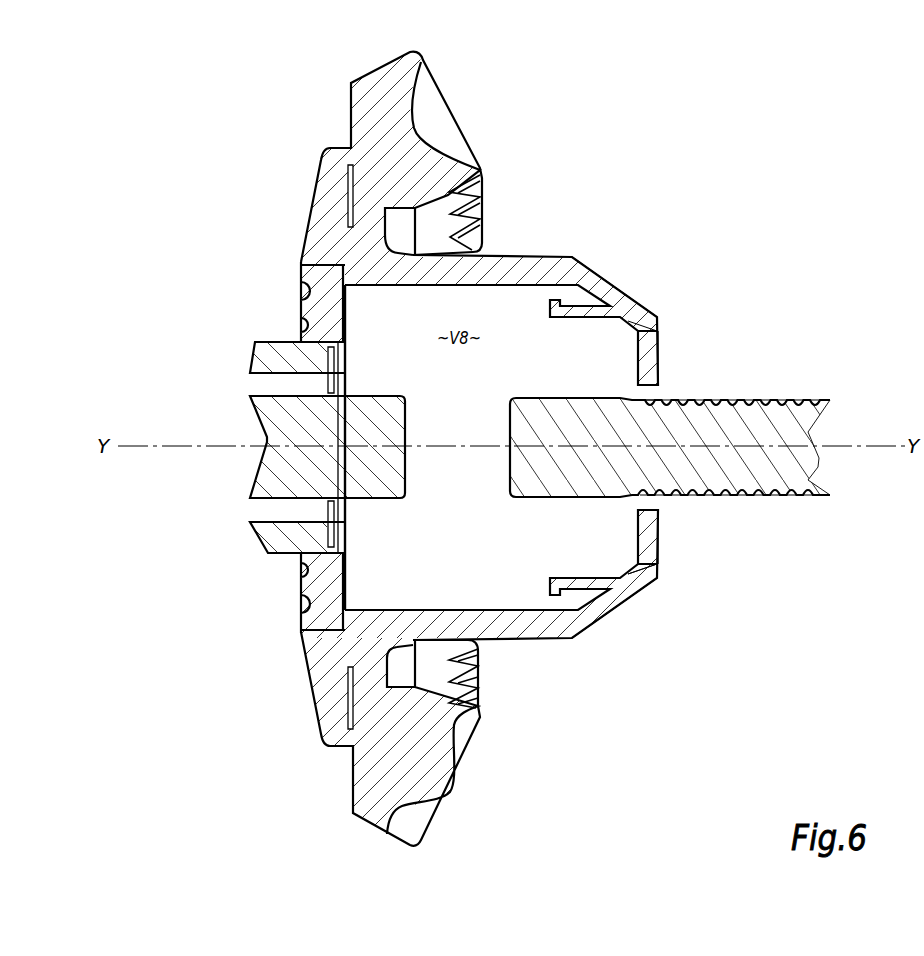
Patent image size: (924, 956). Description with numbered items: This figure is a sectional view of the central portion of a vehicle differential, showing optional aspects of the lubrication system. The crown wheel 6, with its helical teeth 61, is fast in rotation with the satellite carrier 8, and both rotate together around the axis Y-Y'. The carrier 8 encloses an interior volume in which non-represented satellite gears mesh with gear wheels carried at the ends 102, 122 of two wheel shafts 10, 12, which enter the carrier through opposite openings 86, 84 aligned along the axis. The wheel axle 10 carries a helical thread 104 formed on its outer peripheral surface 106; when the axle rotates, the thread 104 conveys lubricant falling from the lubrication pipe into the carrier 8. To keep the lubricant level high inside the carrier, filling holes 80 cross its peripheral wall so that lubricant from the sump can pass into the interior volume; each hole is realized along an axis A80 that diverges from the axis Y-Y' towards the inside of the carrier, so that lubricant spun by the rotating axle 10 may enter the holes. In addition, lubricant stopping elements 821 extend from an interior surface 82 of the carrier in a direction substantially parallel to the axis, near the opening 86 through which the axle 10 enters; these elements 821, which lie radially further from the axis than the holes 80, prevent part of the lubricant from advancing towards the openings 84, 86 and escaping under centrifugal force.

The crown wheel 6 is at (375, 93).
The helical teeth 61 is at (477, 241).
The lubricant stopping elements 821 is at (574, 308).
The satellite carrier 8 is at (618, 273).
The filling holes 80 is at (666, 331).
The axis of filling hole A80 is at (663, 566).
The opening 86 is at (667, 382).
The interior surface 82 is at (613, 580).
The wheel shaft 12 is at (283, 477).
The end of wheel shaft 122 is at (371, 415).
The opening 84 is at (263, 386).
The wheel shaft 10 is at (757, 399).
The end of wheel shaft 102 is at (510, 466).
The helical thread 104 is at (746, 412).
The outer peripheral surface 106 is at (709, 391).